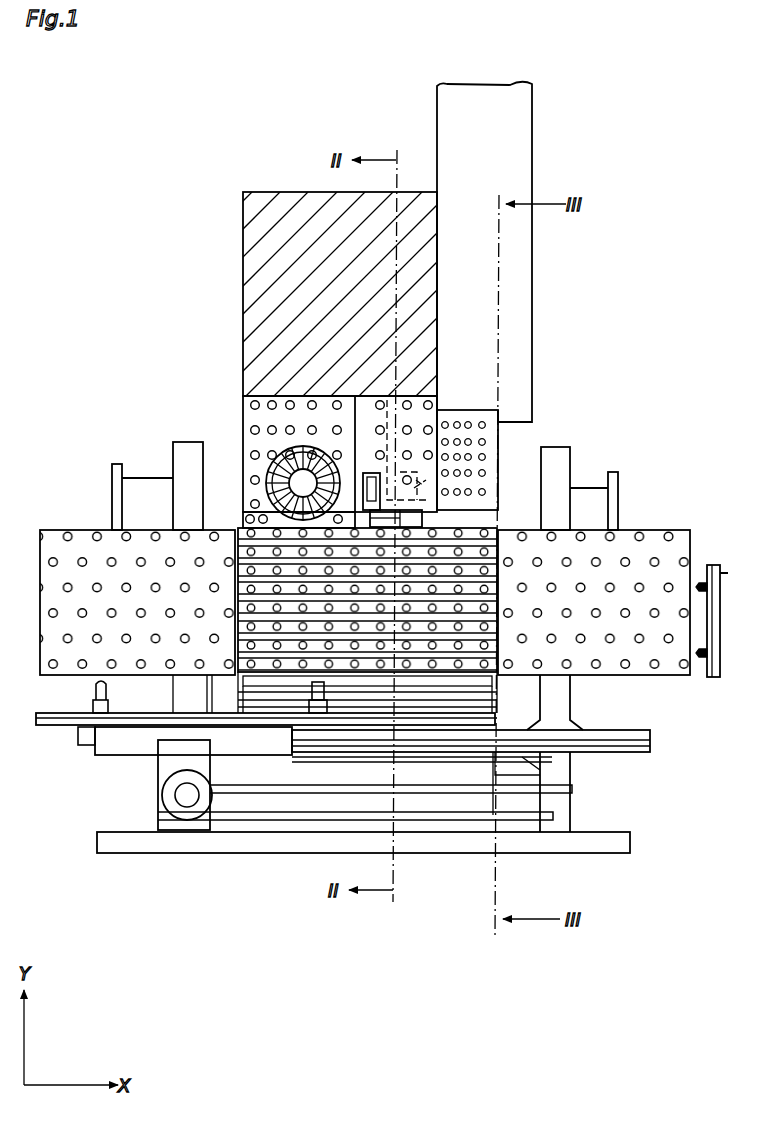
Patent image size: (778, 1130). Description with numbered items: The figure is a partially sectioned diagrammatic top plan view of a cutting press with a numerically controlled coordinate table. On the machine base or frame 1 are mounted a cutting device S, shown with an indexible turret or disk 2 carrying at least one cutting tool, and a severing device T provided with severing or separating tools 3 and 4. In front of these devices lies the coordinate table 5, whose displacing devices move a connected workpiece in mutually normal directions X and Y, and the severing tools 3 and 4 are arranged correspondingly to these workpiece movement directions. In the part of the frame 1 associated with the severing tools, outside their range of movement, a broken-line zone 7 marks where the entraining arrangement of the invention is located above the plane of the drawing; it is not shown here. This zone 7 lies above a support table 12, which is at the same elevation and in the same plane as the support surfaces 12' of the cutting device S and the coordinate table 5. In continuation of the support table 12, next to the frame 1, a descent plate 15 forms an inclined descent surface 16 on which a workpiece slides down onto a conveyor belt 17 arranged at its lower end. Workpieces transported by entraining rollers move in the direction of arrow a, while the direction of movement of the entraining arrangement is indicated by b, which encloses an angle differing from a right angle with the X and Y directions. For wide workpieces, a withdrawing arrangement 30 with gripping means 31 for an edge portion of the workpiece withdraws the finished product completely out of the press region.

The machine base or frame 1 is at (243, 200).
The indexible turret or disk 2 is at (298, 447).
The severing tool 3 is at (239, 392).
The severing tool 4 is at (289, 479).
The coordinate table 5 is at (114, 793).
The zone 7 is at (470, 427).
The support table 12 is at (145, 555).
The support surfaces 12' is at (511, 352).
The descent plate 15 is at (486, 437).
The descent surface 16 is at (464, 483).
The conveyor belt 17 is at (515, 115).
The withdrawing arrangement 30 is at (725, 572).
The gripping means 31 is at (697, 660).
The cutting device S is at (363, 471).
The severing device T is at (390, 391).
The transport direction arrow a is at (443, 490).
The direction of movement b is at (397, 490).